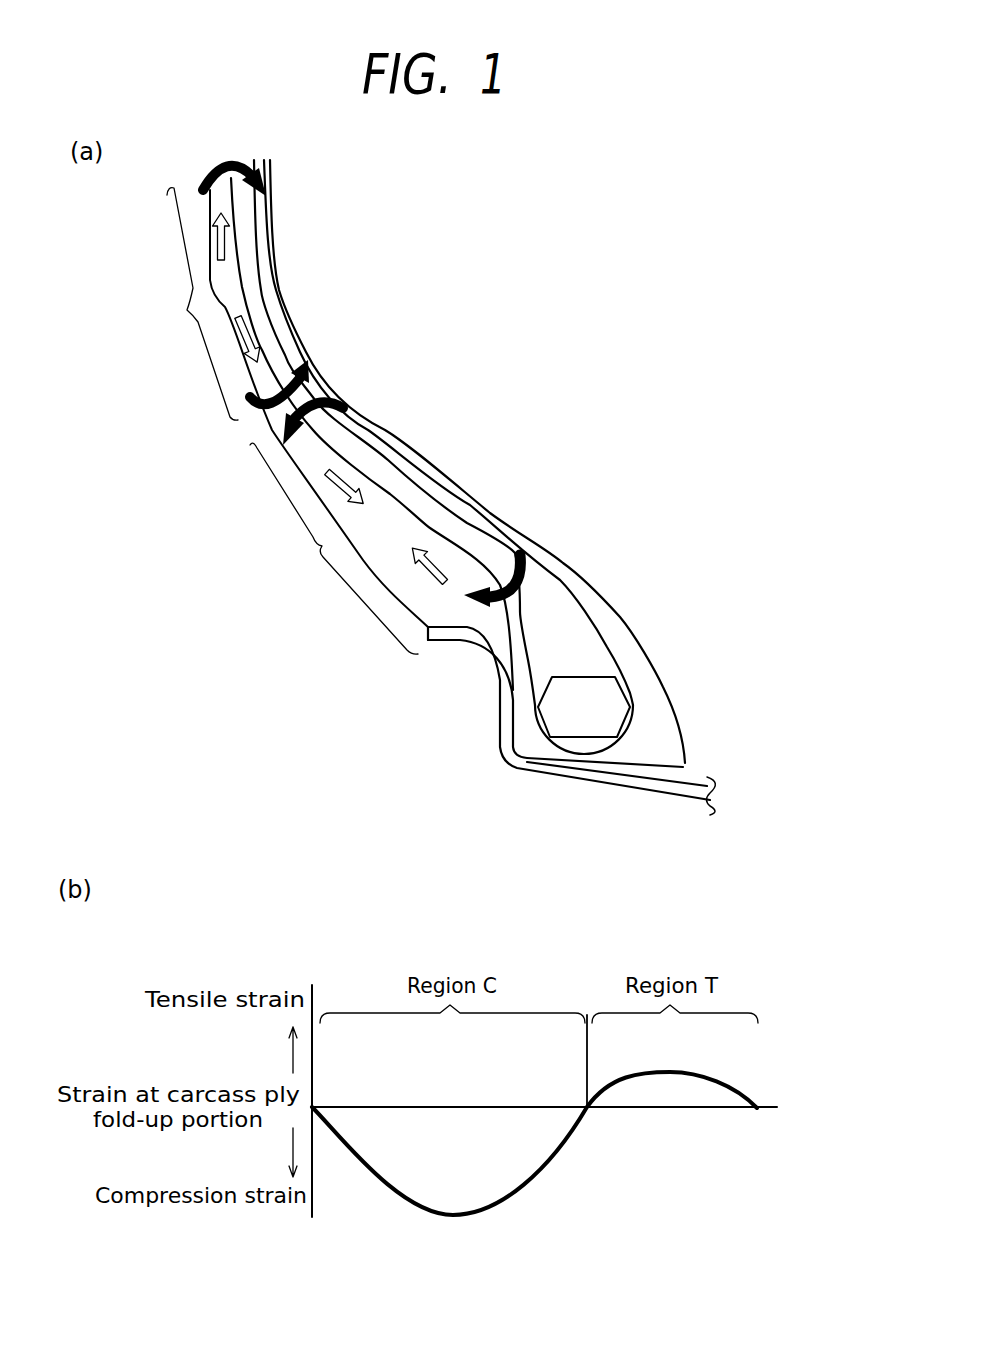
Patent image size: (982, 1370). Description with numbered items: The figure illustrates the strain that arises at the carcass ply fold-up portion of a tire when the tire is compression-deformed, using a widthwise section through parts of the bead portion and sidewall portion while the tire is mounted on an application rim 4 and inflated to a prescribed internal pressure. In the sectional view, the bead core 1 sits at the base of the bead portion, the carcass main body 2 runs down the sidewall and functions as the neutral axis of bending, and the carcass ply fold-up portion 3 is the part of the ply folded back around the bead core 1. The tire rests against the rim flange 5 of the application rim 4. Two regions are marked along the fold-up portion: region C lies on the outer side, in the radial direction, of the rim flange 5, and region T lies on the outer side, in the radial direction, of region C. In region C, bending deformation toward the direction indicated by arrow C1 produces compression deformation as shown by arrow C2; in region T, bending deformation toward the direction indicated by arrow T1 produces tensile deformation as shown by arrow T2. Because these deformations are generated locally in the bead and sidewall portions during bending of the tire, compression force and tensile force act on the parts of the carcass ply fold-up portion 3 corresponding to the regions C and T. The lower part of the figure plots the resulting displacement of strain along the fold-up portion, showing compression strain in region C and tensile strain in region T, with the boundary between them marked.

The bead core 1 is at (607, 707).
The carcass main body 2 is at (588, 617).
The carcass ply fold-up portion 3 is at (521, 610).
The application rim 4 is at (640, 797).
The rim flange 5 is at (483, 643).
The region T is at (200, 304).
The region C is at (334, 548).
The arrow T1 is at (265, 182).
The arrow T2 is at (225, 240).
The arrow C1 is at (343, 397).
The arrow C2 is at (350, 480).